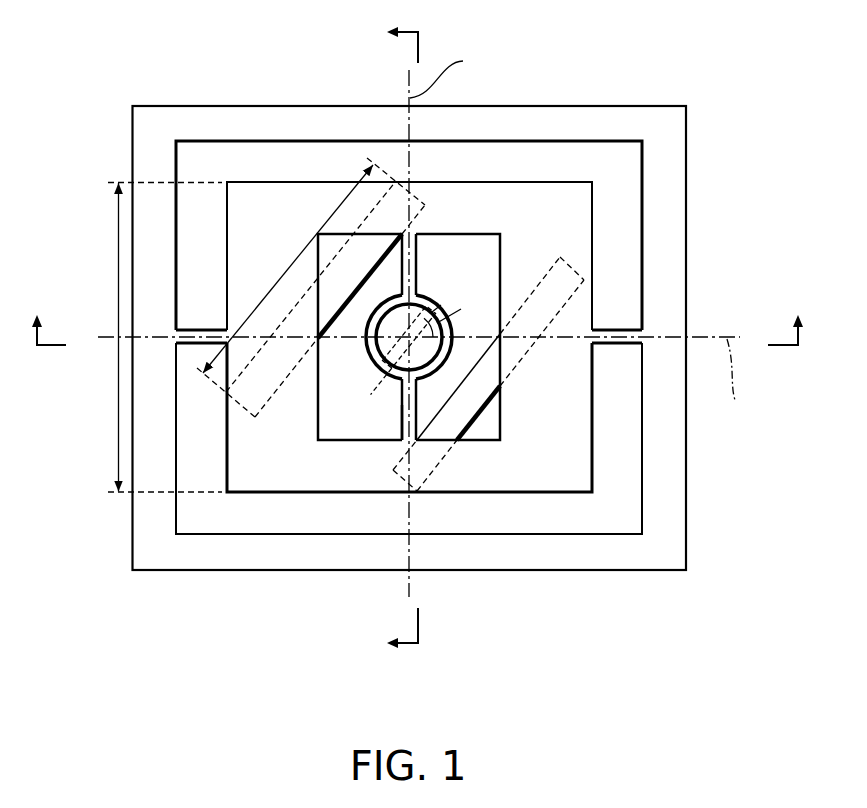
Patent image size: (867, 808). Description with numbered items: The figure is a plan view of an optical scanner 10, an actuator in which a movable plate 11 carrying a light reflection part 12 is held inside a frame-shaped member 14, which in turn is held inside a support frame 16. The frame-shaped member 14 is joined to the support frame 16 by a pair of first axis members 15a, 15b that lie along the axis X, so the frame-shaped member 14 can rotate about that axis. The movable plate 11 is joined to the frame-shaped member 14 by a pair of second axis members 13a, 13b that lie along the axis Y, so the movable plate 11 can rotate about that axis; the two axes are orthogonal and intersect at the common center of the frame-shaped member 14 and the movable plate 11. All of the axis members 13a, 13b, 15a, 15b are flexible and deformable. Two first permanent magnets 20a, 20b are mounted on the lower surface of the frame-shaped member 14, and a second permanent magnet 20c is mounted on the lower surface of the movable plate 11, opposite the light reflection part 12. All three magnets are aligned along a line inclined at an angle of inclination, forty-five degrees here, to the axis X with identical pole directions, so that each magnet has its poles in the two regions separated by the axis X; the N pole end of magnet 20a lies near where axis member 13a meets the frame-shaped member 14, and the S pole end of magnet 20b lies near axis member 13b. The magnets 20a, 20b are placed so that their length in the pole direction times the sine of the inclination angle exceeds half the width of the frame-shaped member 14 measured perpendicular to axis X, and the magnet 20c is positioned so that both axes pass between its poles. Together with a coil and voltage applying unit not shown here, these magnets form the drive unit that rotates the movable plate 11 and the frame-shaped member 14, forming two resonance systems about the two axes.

The optical scanner 10 is at (385, 713).
The movable plate 11 is at (429, 297).
The light reflection part 12 is at (381, 350).
The second axis member 13a is at (412, 263).
The second axis member 13b is at (402, 408).
The frame-shaped member 14 is at (573, 225).
The first axis member 15a is at (196, 335).
The first axis member 15b is at (619, 333).
The support frame 16 is at (688, 245).
The first permanent magnet 20a is at (340, 278).
The first permanent magnet 20b is at (480, 393).
The second permanent magnet 20c is at (402, 408).